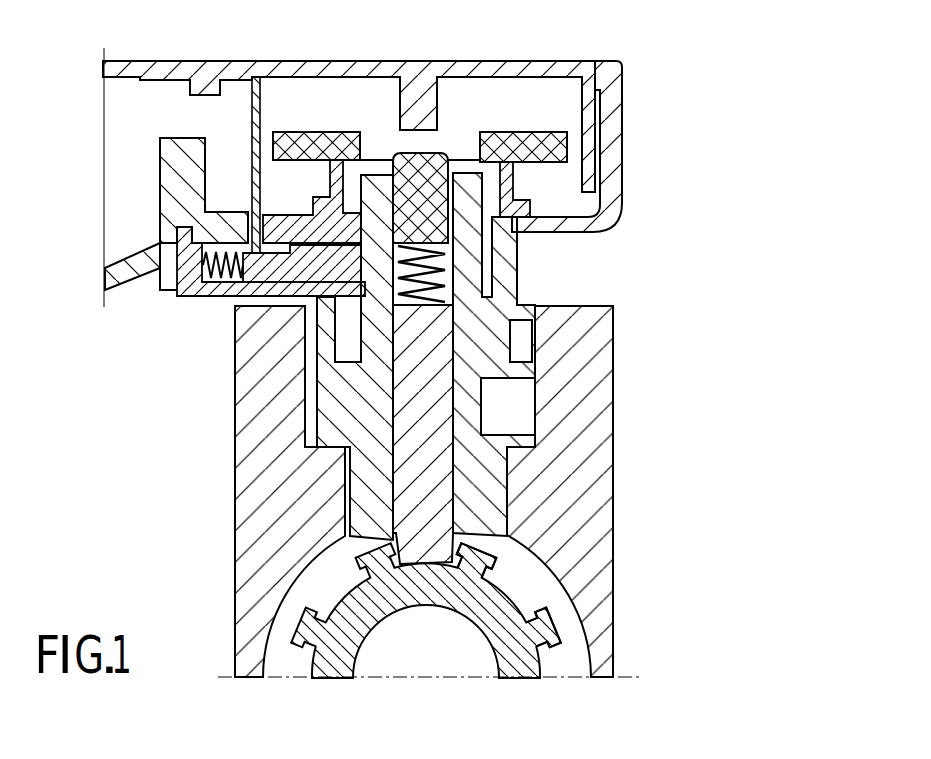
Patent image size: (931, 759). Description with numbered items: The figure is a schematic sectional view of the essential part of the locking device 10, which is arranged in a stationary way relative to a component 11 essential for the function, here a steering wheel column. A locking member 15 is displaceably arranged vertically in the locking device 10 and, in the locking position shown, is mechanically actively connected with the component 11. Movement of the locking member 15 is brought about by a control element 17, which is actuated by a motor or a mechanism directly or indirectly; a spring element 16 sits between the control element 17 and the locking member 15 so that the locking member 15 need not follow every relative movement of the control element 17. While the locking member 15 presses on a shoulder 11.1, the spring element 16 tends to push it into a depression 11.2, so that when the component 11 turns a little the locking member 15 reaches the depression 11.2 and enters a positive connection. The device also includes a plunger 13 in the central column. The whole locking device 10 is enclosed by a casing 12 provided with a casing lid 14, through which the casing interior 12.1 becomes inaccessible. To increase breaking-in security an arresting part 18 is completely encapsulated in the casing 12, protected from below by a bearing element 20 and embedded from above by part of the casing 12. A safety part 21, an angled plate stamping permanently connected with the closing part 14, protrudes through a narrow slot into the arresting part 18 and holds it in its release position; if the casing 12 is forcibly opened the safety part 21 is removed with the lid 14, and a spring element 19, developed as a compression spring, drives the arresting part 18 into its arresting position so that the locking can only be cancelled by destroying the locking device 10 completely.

The locking device 10 is at (374, 376).
The component essential for the function 11 is at (330, 656).
The shoulder 11.1 is at (550, 628).
The depression 11.2 is at (508, 583).
The casing 12 is at (611, 159).
The casing interior 12.1 is at (340, 102).
The plunger 13 is at (468, 536).
The casing lid 14 is at (421, 82).
The locking member 15 is at (422, 486).
The spring element 16 is at (448, 280).
The control element 17 is at (449, 242).
The arresting part 18 is at (275, 296).
The spring element 19 is at (207, 297).
The bearing element 20 is at (167, 298).
The safety part 21 is at (261, 100).